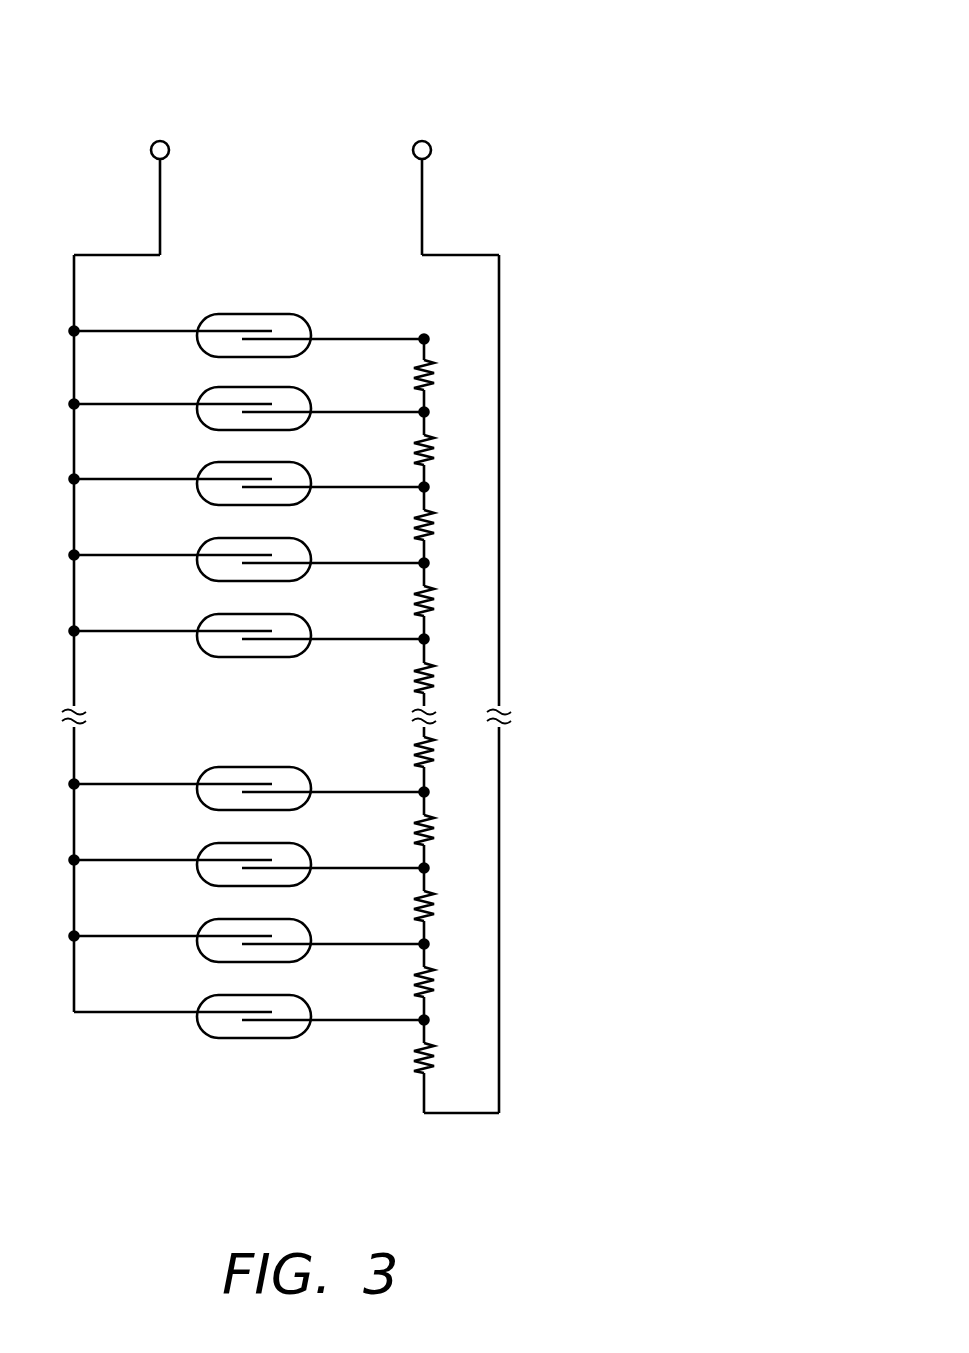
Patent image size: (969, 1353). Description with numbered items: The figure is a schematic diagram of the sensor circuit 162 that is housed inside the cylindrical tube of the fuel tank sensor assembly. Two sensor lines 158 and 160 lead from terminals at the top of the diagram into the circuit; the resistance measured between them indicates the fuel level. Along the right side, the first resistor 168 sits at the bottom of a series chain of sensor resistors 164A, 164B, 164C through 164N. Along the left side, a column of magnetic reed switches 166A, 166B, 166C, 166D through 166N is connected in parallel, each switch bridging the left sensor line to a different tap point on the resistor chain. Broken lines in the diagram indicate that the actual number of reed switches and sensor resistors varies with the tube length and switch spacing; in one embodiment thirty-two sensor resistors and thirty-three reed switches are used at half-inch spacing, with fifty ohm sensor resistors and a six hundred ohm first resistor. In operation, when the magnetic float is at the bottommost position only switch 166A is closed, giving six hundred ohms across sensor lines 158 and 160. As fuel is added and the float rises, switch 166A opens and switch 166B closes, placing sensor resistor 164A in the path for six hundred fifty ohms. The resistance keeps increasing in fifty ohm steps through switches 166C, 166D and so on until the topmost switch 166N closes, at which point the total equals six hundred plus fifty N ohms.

The sensor circuit 162 is at (512, 45).
The sensor line 158 is at (168, 144).
The sensor line 160 is at (430, 144).
The magnetic reed switch 166N is at (280, 313).
The magnetic reed switch 166D is at (212, 766).
The magnetic reed switch 166C is at (212, 843).
The magnetic reed switch 166B is at (212, 919).
The magnetic reed switch 166A is at (212, 995).
The sensor resistor 164N is at (430, 364).
The sensor resistor 164C is at (433, 823).
The sensor resistor 164B is at (433, 900).
The sensor resistor 164A is at (433, 978).
The first resistor 168 is at (433, 1055).